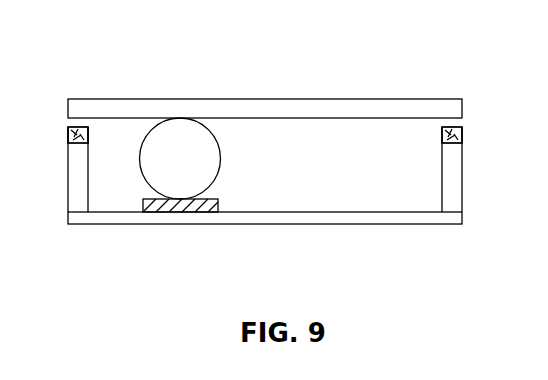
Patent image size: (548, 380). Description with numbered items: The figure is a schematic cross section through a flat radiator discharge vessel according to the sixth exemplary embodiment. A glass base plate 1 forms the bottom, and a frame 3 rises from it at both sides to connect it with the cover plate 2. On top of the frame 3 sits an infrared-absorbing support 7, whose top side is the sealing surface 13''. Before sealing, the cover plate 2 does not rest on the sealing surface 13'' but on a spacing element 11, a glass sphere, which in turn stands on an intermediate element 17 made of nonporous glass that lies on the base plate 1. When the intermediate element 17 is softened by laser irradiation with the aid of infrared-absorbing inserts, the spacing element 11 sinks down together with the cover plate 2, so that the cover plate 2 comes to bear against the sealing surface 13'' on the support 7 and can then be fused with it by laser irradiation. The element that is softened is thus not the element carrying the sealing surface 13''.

The base plate 1 is at (367, 213).
The cover plate 2 is at (342, 105).
The frame 3 is at (451, 183).
The infrared-absorbing support 7 is at (68, 136).
The spacing element 11 is at (179, 143).
The sealing surface 13'' is at (272, 81).
The intermediate element 17 is at (163, 208).